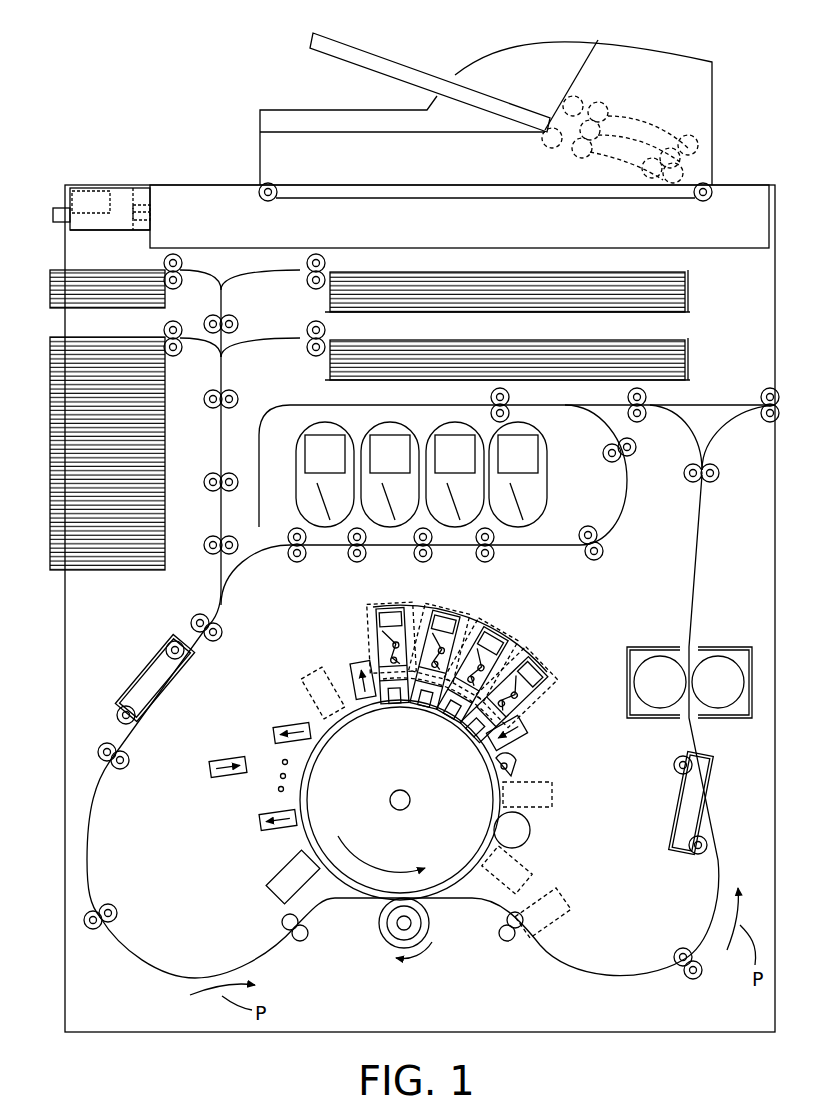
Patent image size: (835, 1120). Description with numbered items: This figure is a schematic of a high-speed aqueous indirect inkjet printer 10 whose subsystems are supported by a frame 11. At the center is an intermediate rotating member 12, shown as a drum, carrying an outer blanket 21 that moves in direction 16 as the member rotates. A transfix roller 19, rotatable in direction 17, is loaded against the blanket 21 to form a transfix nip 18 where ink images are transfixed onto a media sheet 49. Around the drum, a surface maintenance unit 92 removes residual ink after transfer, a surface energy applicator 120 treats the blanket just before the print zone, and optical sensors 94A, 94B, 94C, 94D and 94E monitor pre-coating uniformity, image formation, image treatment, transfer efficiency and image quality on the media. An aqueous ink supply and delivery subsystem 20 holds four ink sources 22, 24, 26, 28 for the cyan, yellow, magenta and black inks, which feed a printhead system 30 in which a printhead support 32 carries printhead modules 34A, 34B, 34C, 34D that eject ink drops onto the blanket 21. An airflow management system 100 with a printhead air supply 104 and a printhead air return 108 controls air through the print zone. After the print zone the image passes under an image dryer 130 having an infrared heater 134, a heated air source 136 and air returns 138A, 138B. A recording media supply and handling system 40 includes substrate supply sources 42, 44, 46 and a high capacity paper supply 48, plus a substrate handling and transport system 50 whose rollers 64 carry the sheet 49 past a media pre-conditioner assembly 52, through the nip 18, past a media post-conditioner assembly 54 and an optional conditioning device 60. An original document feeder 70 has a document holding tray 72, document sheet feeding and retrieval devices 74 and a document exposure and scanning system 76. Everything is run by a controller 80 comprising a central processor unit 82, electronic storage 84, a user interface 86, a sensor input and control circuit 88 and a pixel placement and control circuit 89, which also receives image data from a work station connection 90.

The printer 10 is at (127, 64).
The frame 11 is at (65, 697).
The intermediate rotating member 12 is at (412, 762).
The direction 16 is at (350, 858).
The direction 17 is at (420, 960).
The transfix nip 18 is at (366, 916).
The transfix roller 19 is at (440, 927).
The aqueous ink supply and delivery subsystem 20 is at (352, 422).
The blanket 21 is at (460, 880).
The source of aqueous ink 22 is at (336, 466).
The source of aqueous ink 24 is at (401, 466).
The source of aqueous ink 26 is at (466, 466).
The source of aqueous ink 28 is at (529, 466).
The printhead system 30 is at (352, 606).
The printhead support 32 is at (528, 706).
The printhead module 34A is at (408, 613).
The printhead module 34B is at (462, 627).
The printhead module 34C is at (505, 653).
The printhead module 34D is at (535, 678).
The recording media supply and handling system 40 is at (42, 478).
The substrate supply source 42 is at (690, 290).
The substrate supply source 44 is at (690, 358).
The substrate supply source 46 is at (60, 312).
The high capacity paper supply 48 is at (107, 570).
The media sheet 49 is at (345, 905).
The substrate handling and transport system 50 is at (87, 845).
The media pre-conditioner assembly 52 is at (148, 670).
The media post-conditioner assembly 54 is at (707, 792).
The conditioning device 60 is at (652, 648).
The rollers 64 is at (112, 910).
The original document feeder 70 is at (276, 98).
The document holding tray 72 is at (338, 38).
The document sheet feeding and retrieval devices 74 is at (640, 126).
The document exposure and scanning system 76 is at (518, 200).
The controller 80 is at (110, 196).
The central processor unit 82 is at (88, 198).
The electronic storage 84 is at (118, 226).
The user interface 86 is at (131, 188).
The sensor input and control circuit 88 is at (141, 194).
The pixel placement and control circuit 89 is at (150, 212).
The work station connection 90 is at (53, 215).
The surface maintenance unit 92 is at (531, 829).
The optical sensor 94A is at (553, 796).
The optical sensor 94B is at (317, 675).
The optical sensor 94C is at (272, 872).
The optical sensor 94D is at (532, 866).
The optical sensor 94E is at (568, 905).
The airflow management system 100 is at (546, 714).
The printhead air supply 104 is at (524, 726).
The printhead air return 108 is at (358, 664).
The surface energy applicator 120 is at (517, 760).
The image dryer 130 is at (243, 724).
The infrared heater 134 is at (242, 790).
The heated air source 136 is at (212, 763).
The air return 138A is at (290, 723).
The air return 138B is at (260, 816).